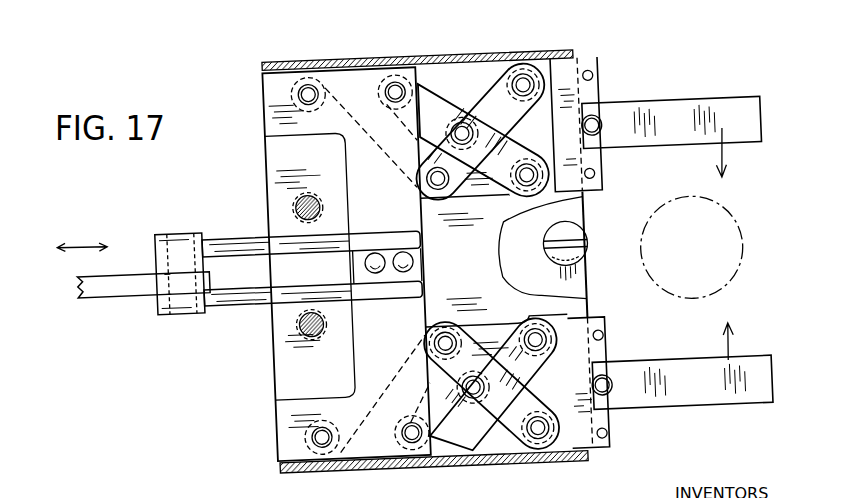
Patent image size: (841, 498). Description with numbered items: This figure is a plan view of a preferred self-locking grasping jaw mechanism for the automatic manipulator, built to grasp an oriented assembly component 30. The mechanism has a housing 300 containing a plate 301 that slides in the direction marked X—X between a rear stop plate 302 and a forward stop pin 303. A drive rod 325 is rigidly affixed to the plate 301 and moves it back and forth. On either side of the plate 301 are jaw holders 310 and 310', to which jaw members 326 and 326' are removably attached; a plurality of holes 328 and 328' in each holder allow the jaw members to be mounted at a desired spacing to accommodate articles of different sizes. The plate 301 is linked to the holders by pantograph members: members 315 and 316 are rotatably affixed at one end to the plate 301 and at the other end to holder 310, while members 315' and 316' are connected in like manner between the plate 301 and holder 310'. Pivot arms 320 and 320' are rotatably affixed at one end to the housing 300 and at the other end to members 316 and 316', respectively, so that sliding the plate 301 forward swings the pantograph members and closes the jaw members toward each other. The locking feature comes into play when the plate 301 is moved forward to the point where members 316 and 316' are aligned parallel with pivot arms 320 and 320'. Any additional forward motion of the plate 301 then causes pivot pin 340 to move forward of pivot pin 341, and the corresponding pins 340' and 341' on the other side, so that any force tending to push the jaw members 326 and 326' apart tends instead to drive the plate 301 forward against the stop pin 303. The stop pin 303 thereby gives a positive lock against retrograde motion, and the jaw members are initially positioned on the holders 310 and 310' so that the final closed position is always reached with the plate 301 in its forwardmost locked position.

The assembly component 30 is at (735, 246).
The housing 300 is at (500, 57).
The plate 301 is at (409, 314).
The rear stop plate 302 is at (283, 344).
The forward stop pin 303 is at (576, 242).
The jaw holder 310 is at (619, 381).
The jaw holder 310' is at (605, 123).
The pantograph member 315 is at (384, 394).
The pantograph member 315' is at (357, 108).
The pantograph member 316 is at (492, 405).
The pantograph member 316' is at (483, 111).
The pivot arm 320 is at (494, 406).
The pivot arm 320' is at (480, 132).
The drive rod 325 is at (244, 255).
The jaw member 326 is at (693, 361).
The jaw member 326' is at (671, 120).
The holes 328 is at (630, 381).
The holes 328' is at (621, 110).
The pivot pin 340 is at (367, 456).
The pivot pin 340' is at (351, 68).
The pivot pin 341 is at (495, 385).
The pivot pin 341' is at (489, 131).